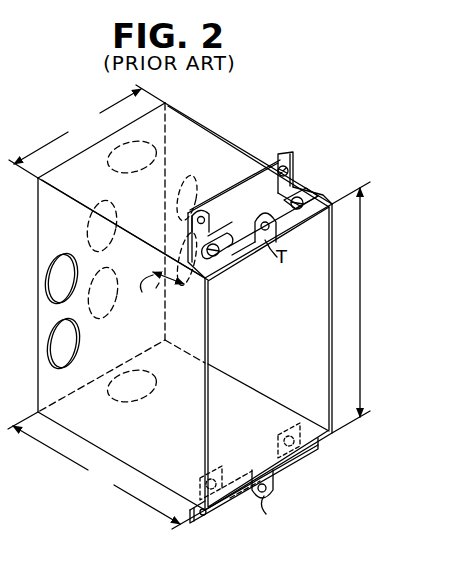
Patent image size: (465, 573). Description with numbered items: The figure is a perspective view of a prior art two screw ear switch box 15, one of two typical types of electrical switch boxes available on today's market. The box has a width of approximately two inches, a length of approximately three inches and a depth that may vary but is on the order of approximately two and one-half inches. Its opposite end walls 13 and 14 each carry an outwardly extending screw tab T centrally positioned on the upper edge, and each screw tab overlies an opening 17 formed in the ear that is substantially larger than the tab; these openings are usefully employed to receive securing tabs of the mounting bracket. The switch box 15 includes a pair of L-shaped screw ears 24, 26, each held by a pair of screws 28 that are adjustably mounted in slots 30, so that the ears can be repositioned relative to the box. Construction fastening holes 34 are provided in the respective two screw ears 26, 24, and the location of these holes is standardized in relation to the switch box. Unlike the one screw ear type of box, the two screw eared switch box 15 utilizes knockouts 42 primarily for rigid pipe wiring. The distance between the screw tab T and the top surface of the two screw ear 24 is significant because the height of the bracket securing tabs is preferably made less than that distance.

The end wall 13 is at (207, 142).
The end wall 14 is at (262, 410).
The two screw ear switch box 15 is at (313, 137).
The opening 17 is at (255, 199).
The L-shaped screw ear 24 is at (239, 191).
The L-shaped screw ear 26 is at (203, 514).
The screw 28 is at (212, 243).
The slot 30 is at (221, 259).
The construction fastening hole 34 is at (284, 163).
The knockout 42 is at (52, 347).